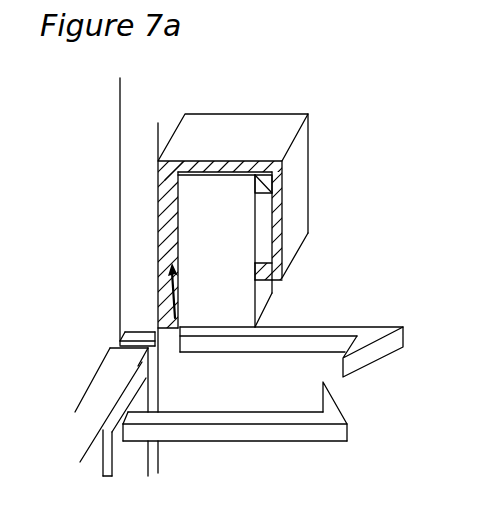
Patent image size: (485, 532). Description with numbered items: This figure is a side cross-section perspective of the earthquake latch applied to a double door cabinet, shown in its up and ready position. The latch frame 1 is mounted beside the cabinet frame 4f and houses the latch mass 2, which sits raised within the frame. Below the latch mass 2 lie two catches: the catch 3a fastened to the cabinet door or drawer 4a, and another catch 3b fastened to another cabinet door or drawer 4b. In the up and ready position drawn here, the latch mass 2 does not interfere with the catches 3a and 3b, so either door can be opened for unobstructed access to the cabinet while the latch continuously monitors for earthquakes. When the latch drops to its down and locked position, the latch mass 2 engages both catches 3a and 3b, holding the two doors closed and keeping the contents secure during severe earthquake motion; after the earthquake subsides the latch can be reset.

The latch frame 1 is at (317, 145).
The latch mass 2 is at (278, 288).
The catch 3a is at (258, 357).
The another catch 3b is at (260, 445).
The cabinet door or drawer 4a is at (117, 341).
The another cabinet door or drawer 4b is at (82, 382).
The cabinet frame 4f is at (110, 163).